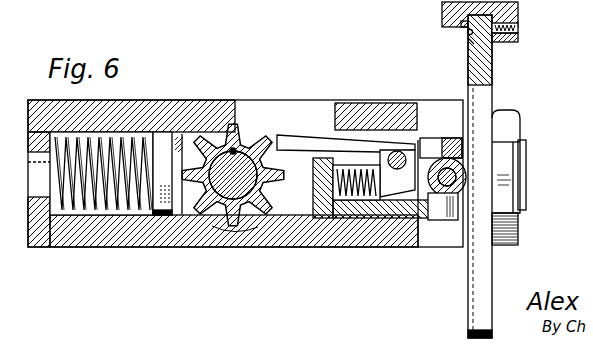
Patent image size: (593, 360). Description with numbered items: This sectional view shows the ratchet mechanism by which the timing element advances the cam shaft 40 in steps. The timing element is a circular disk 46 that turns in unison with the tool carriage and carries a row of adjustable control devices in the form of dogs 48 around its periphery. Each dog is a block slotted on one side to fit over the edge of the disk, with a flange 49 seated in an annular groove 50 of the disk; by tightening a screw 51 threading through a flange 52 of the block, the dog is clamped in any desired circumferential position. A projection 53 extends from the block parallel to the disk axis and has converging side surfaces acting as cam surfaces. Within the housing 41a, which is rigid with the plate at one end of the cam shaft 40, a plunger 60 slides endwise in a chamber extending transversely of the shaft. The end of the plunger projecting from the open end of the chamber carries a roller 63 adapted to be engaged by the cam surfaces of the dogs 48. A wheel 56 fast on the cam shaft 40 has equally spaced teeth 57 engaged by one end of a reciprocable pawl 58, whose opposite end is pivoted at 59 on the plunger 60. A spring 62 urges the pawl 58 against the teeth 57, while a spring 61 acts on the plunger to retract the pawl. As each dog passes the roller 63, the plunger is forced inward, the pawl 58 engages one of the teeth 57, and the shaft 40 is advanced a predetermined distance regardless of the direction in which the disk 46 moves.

The housing 41a is at (80, 246).
The spring 61 is at (143, 134).
The wheel 56 is at (188, 214).
The cam shaft 40 is at (275, 160).
The teeth 57 is at (280, 203).
The pawl 58 is at (296, 142).
The pivot 59 is at (404, 154).
The spring 62 is at (374, 175).
The roller 63 is at (443, 167).
The plunger 60 is at (447, 220).
The circular disk 46 is at (486, 100).
The dogs 48 is at (520, 6).
The screw 51 is at (520, 28).
The flange 52 is at (520, 38).
The projection 53 is at (461, 25).
The flange 49 is at (467, 33).
The annular groove 50 is at (469, 41).